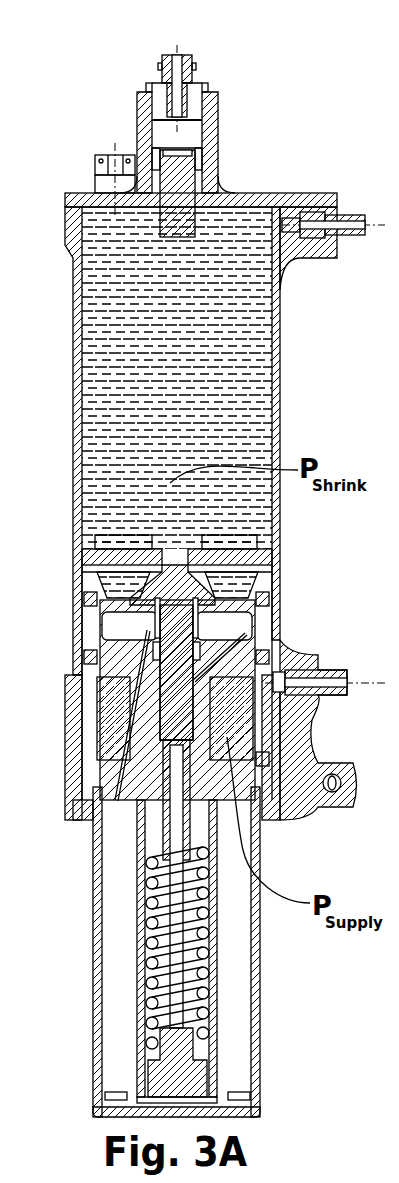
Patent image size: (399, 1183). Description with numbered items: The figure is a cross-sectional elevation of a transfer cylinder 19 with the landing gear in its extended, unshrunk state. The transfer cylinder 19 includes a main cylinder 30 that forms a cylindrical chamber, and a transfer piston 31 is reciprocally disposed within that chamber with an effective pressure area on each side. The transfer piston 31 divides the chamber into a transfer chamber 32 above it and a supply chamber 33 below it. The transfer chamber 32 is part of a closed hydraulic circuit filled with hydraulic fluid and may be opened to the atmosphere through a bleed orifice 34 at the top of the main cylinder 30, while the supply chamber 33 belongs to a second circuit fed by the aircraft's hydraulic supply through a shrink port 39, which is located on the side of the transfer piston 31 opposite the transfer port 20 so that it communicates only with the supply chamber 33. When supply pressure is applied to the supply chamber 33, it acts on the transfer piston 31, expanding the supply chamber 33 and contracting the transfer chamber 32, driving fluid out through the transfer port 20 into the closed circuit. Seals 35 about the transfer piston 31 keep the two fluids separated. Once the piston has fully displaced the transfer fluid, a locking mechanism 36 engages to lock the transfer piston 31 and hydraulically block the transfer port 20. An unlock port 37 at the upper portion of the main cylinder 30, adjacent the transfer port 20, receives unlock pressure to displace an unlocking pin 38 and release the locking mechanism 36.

The transfer cylinder 19 is at (100, 70).
The transfer port 20 is at (366, 237).
The main cylinder 30 is at (280, 343).
The transfer piston 31 is at (93, 915).
The transfer chamber 32 is at (203, 362).
The supply chamber 33 is at (240, 703).
The bleed orifice 34 is at (95, 157).
The seals 35 is at (258, 640).
The locking mechanism 36 is at (98, 556).
The unlock port 37 is at (192, 67).
The unlocking pin 38 is at (199, 224).
The shrink port 39 is at (347, 696).